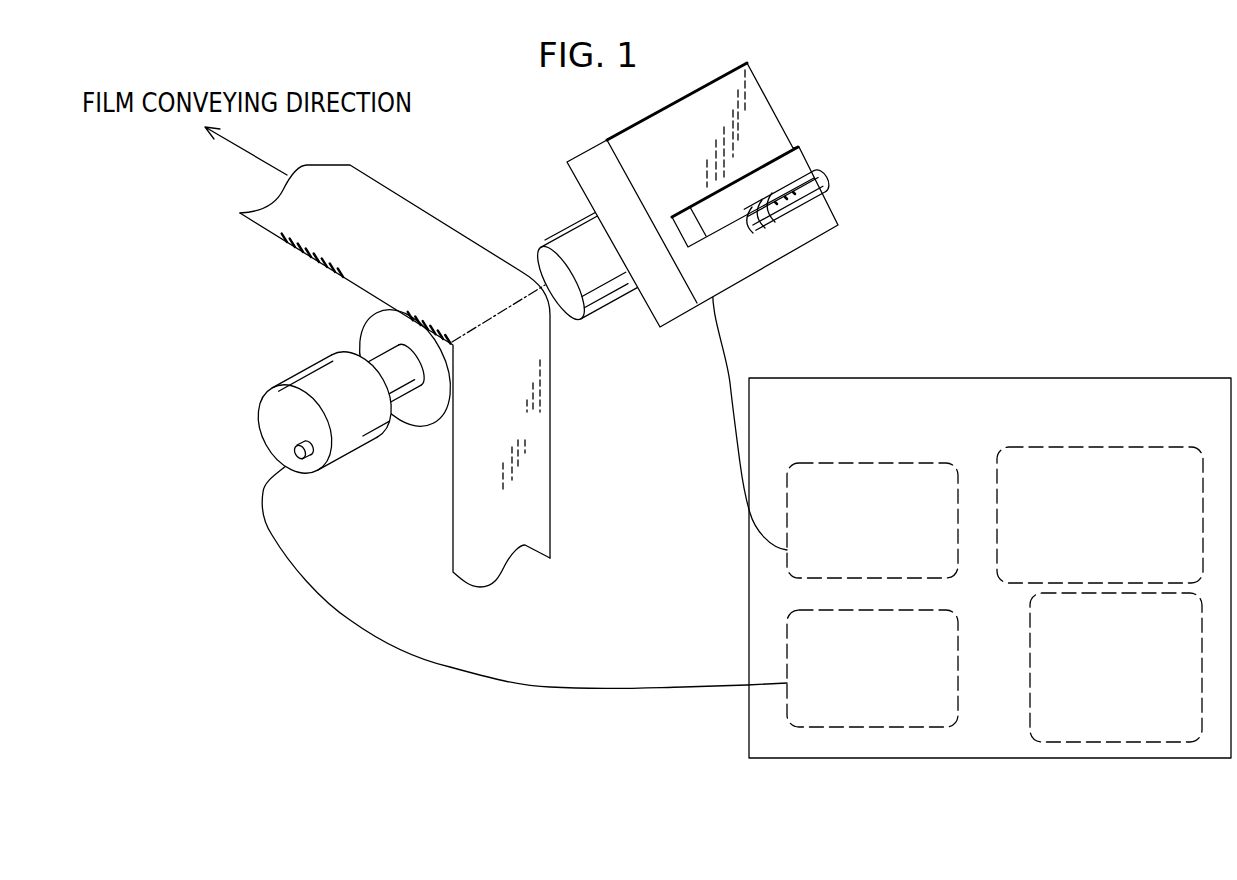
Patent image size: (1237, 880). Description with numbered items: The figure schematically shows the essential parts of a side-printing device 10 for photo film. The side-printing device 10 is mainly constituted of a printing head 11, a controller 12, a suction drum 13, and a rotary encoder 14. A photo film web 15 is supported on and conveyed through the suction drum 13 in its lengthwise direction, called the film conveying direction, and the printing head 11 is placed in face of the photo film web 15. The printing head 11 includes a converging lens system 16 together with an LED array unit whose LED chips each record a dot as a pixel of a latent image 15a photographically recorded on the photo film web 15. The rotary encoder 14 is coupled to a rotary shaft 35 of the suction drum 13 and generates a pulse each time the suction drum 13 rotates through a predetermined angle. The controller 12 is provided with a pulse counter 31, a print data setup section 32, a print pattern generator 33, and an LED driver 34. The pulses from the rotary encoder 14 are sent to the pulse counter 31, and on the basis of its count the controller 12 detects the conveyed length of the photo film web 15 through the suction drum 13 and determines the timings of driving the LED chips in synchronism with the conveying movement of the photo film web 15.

The side-printing device 10 is at (256, 629).
The printing head 11 is at (794, 113).
The controller 12 is at (1035, 378).
The suction drum 13 is at (383, 322).
The rotary encoder 14 is at (280, 407).
The photo film web 15 is at (403, 196).
The latent image 15a is at (317, 243).
The converging lens system 16 is at (595, 317).
The pulse counter 31 is at (960, 700).
The print data setup section 32 is at (1135, 447).
The print pattern generator 33 is at (1027, 653).
The LED driver 34 is at (850, 463).
The rotary shaft 35 is at (403, 385).